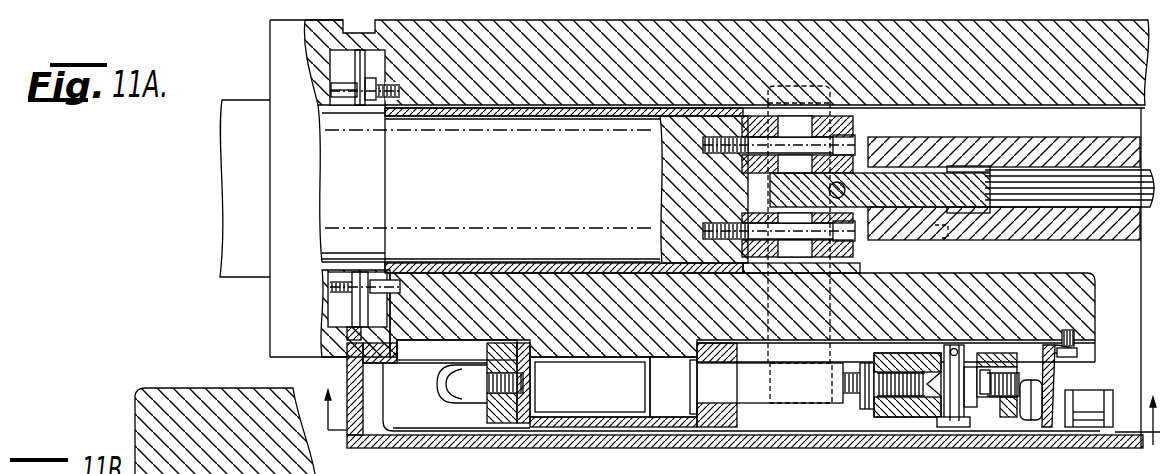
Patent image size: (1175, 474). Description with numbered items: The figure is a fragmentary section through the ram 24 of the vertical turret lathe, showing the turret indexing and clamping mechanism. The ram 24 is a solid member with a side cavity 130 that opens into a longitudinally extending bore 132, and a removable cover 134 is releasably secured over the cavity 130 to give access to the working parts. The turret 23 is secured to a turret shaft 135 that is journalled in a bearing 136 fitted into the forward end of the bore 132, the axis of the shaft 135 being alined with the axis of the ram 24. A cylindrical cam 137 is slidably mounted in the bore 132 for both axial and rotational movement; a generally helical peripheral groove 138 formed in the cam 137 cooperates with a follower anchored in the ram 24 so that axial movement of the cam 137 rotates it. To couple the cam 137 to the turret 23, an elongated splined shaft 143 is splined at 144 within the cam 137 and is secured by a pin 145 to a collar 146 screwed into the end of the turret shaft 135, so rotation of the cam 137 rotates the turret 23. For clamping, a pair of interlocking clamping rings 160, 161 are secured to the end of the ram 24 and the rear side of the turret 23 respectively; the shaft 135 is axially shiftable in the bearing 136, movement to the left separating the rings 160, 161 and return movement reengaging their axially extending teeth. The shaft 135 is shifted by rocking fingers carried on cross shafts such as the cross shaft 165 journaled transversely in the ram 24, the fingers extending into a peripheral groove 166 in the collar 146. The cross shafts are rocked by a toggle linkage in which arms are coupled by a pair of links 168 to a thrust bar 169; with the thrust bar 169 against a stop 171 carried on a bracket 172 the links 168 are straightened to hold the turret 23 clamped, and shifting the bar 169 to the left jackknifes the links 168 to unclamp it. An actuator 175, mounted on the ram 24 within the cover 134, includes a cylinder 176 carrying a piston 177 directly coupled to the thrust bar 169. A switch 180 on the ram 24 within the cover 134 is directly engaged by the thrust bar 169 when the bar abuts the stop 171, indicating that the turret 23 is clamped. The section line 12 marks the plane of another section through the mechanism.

The section line 12 is at (736, 432).
The turret 23 is at (233, 135).
The ram 24 is at (1019, 67).
The side cavity 130 is at (1093, 323).
The bore 132 is at (898, 256).
The removable cover 134 is at (449, 440).
The turret shaft 135 is at (406, 183).
The bearing 136 is at (604, 108).
The cylindrical cam 137 is at (1050, 150).
The helical peripheral groove 138 is at (946, 244).
The splined shaft 143 is at (1075, 192).
The spline 144 is at (907, 170).
The pin 145 is at (843, 184).
The collar 146 is at (745, 127).
The clamping ring 160 is at (381, 108).
The clamping ring 161 is at (347, 107).
The cross shaft 165 is at (785, 387).
The peripheral groove 166 is at (820, 129).
The link 168 is at (927, 381).
The thrust bar 169 is at (887, 417).
The stop 171 is at (985, 400).
The bracket 172 is at (998, 398).
The actuator 175 is at (577, 427).
The cylinder 176 is at (601, 421).
The piston 177 is at (657, 388).
The switch 180 is at (1087, 400).